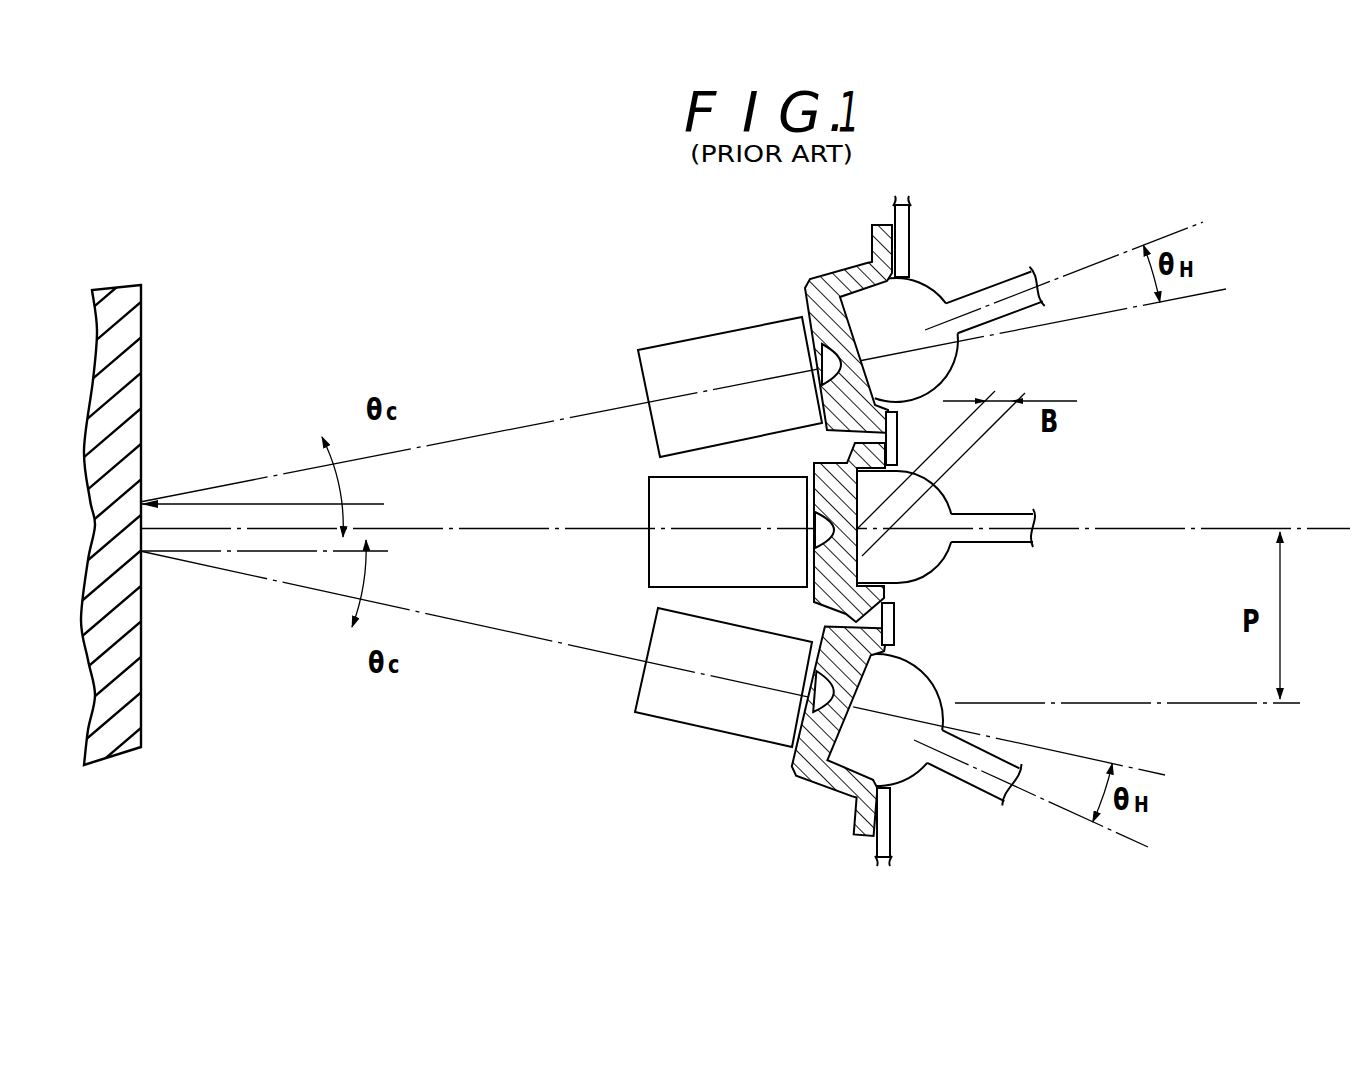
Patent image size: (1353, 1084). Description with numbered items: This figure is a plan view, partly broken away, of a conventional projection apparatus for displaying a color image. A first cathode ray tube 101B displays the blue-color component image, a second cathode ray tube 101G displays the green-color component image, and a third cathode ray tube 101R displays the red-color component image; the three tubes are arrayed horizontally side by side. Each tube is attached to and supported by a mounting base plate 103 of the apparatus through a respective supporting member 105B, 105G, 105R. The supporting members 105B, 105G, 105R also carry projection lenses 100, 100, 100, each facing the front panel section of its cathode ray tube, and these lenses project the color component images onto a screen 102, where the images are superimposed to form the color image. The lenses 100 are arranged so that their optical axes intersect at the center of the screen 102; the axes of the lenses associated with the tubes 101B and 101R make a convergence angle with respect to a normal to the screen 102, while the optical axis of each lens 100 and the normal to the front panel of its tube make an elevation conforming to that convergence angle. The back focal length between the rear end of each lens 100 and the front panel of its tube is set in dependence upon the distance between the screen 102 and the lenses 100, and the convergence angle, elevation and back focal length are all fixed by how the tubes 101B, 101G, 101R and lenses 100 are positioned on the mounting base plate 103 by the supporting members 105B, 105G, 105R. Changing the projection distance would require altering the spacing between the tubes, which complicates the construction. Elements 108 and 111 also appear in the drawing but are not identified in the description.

The projection lens 100 is at (663, 425).
The third cathode ray tube 101R is at (1000, 300).
The second cathode ray tube 101G is at (965, 545).
The first cathode ray tube 101B is at (975, 747).
The screen 102 is at (141, 712).
The mounting base plate 103 is at (885, 855).
The supporting member 105R is at (833, 288).
The supporting member 105G is at (814, 592).
The supporting member 105B is at (825, 790).
The coupling lens 108 is at (812, 355).
The phosphor screen 111 is at (842, 394).